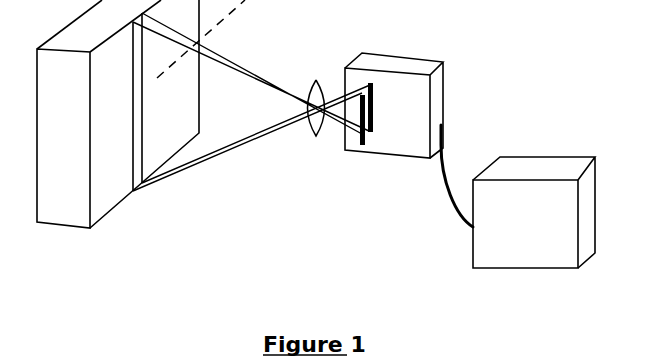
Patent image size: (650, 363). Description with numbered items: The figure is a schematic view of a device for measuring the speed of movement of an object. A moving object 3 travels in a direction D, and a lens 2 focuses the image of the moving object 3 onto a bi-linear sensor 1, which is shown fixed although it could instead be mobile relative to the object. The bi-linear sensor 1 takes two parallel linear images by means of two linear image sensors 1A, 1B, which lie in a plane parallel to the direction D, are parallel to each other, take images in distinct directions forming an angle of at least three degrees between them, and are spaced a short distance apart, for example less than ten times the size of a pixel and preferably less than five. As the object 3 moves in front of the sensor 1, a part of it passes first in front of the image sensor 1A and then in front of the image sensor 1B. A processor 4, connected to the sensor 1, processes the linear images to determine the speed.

The moving object 3 is at (118, 114).
The direction of movement D is at (248, 0).
The lens 2 is at (315, 80).
The bi-linear sensor 1 is at (351, 152).
The linear image sensor 1A is at (364, 148).
The linear image sensor 1B is at (375, 90).
The processor 4 is at (518, 196).